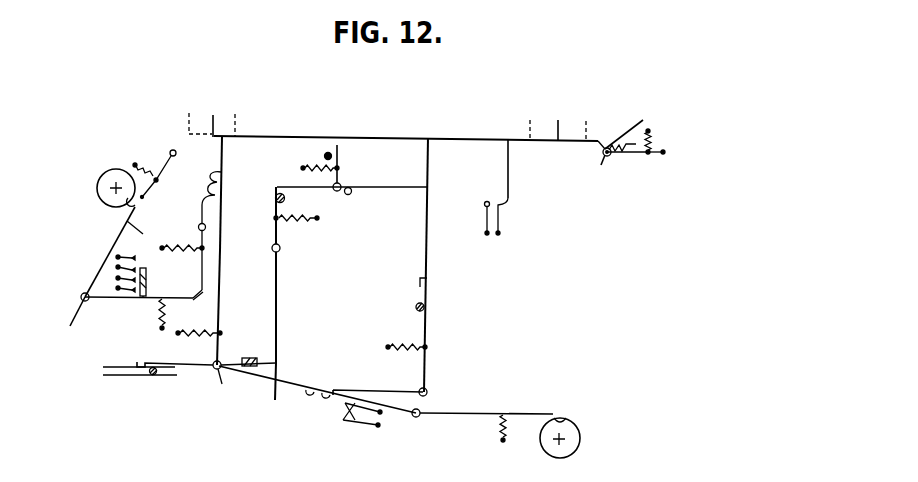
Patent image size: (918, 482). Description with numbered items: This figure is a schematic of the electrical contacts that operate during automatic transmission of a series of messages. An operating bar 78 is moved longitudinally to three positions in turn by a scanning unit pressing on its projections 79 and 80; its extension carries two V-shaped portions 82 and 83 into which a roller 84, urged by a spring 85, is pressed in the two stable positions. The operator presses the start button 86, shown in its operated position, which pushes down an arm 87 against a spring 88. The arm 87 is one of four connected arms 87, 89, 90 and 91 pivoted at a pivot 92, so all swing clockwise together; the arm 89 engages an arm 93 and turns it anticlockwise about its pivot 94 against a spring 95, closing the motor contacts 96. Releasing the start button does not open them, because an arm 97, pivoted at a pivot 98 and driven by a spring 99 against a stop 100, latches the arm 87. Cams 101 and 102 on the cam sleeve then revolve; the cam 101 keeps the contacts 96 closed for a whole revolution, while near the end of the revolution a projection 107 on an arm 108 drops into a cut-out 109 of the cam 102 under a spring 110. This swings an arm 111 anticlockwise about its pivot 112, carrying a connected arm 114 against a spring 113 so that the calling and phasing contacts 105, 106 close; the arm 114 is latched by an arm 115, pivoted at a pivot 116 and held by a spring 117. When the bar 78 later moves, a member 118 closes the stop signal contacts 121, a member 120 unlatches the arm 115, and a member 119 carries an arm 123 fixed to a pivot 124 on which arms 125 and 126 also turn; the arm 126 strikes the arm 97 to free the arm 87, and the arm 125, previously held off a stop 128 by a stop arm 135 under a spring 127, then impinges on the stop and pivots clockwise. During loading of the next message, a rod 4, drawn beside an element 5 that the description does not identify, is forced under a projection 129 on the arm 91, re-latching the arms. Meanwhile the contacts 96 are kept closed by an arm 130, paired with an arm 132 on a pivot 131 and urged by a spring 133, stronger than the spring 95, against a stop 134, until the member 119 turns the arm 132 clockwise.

The rod 4 is at (167, 372).
The supply leads 5 is at (140, 381).
The operating bar 78 is at (410, 138).
The projection 79 is at (213, 115).
The projection 80 is at (556, 114).
The V-shaped portion 82 is at (623, 138).
The V-shaped portion 83 is at (634, 123).
The roller 84 is at (616, 168).
The spring 85 is at (658, 135).
The start button 86 is at (246, 358).
The arm 87 is at (278, 364).
The spring 88 is at (196, 333).
The arm 89 is at (265, 392).
The arm 90 is at (213, 318).
The arm 91 is at (213, 362).
The pivot 92 is at (227, 387).
The arm 93 is at (328, 400).
The pivot 94 is at (419, 417).
The spring 95 is at (489, 428).
The contacts 96 is at (341, 413).
The arm 97 is at (277, 320).
The pivot 98 is at (280, 251).
The spring 99 is at (300, 222).
The stop 100 is at (285, 199).
The cam 101 is at (571, 441).
The cam 102 is at (100, 195).
The contacts 105 is at (116, 282).
The contacts 106 is at (137, 262).
The projection 107 is at (143, 198).
The arm 108 is at (144, 248).
The cut-out 109 is at (128, 214).
The spring 110 is at (154, 170).
The arm 111 is at (97, 271).
The pivot 112 is at (73, 318).
The spring 113 is at (161, 322).
The arm 114 is at (125, 299).
The arm 115 is at (200, 280).
The pivot 116 is at (198, 227).
The spring 117 is at (186, 248).
The member 118 is at (509, 167).
The member 119 is at (429, 158).
The member 120 is at (240, 193).
The stop signal contacts 121 is at (497, 198).
The arm 123 is at (388, 186).
The pivot 124 is at (355, 180).
The arm 125 is at (339, 167).
The arm 126 is at (280, 180).
The spring 127 is at (327, 171).
The stop 128 is at (324, 156).
The projection 129 is at (137, 362).
The arm 130 is at (373, 390).
The pivot 131 is at (428, 391).
The arm 132 is at (428, 290).
The spring 133 is at (416, 349).
The stop 134 is at (415, 307).
The stop arm 135 is at (352, 193).